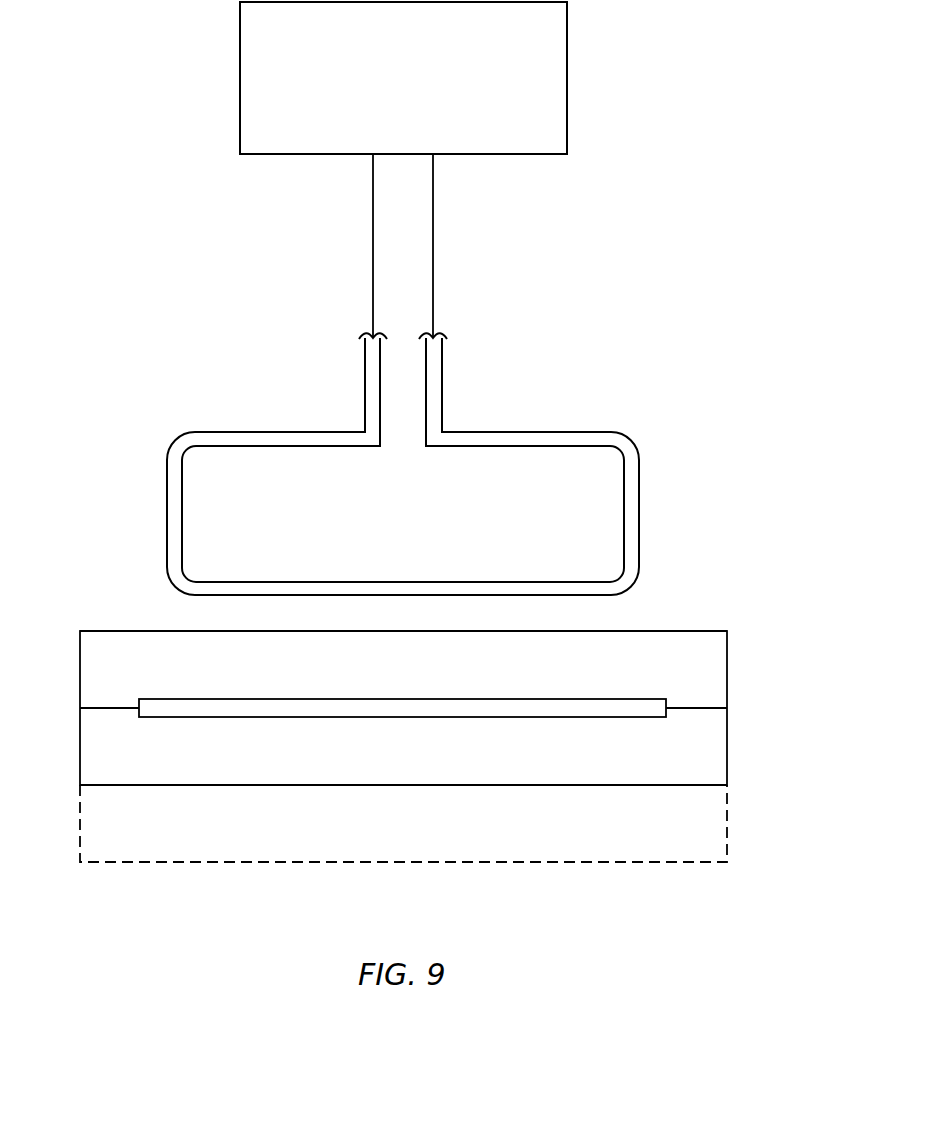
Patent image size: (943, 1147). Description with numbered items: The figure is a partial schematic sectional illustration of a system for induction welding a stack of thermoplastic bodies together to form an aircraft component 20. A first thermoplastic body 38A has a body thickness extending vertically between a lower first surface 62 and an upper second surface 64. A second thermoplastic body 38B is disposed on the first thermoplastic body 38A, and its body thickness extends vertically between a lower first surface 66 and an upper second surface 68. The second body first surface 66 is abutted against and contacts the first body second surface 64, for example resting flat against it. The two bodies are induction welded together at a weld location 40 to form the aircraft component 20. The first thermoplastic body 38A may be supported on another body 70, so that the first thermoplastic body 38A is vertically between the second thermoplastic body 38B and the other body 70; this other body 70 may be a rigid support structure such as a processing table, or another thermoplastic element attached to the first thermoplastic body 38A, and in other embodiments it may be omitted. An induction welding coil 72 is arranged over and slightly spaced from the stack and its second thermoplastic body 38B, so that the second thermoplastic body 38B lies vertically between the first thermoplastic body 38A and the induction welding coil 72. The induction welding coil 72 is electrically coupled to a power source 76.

The power source 76 is at (417, 107).
The induction welding coil 72 is at (662, 421).
The aircraft component 20 is at (738, 604).
The second thermoplastic body 38B is at (742, 661).
The first thermoplastic body 38A is at (742, 761).
The weld location 40 is at (382, 708).
The second surface of second thermoplastic body 68 is at (121, 631).
The first surface of second thermoplastic body 66 is at (104, 708).
The second surface of first thermoplastic body 64 is at (697, 708).
The first surface of first thermoplastic body 62 is at (706, 786).
The other body 70 is at (742, 844).